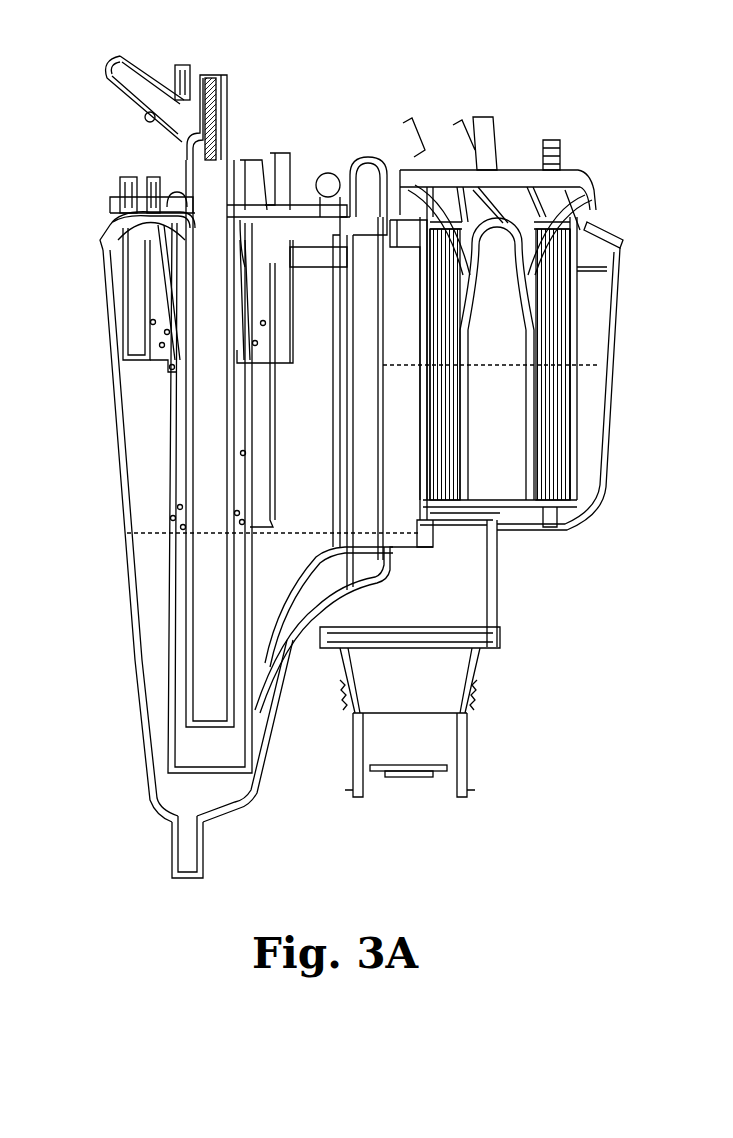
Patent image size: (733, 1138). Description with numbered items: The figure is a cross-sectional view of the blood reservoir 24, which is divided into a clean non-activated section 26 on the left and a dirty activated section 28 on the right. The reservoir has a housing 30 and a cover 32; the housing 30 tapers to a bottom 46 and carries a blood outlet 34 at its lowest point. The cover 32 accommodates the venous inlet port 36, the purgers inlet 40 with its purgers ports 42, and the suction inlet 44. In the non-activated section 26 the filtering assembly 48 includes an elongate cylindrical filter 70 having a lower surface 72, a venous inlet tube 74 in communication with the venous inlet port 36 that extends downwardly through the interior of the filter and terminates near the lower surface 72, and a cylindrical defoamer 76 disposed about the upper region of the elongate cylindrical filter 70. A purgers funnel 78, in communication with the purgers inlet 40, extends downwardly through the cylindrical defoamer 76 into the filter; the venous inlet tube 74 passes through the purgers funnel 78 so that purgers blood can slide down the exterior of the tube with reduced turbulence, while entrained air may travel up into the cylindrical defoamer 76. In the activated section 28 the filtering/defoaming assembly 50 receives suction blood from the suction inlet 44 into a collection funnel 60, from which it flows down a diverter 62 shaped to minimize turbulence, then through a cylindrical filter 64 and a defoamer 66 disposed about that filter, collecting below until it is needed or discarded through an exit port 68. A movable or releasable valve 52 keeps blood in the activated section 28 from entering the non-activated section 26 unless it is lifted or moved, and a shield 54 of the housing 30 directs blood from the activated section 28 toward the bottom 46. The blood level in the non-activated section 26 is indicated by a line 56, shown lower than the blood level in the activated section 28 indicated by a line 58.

The blood reservoir 24 is at (311, 73).
The non-activated section 26 is at (82, 70).
The activated section 28 is at (626, 183).
The housing 30 is at (618, 300).
The cover 32 is at (605, 237).
The blood outlet 34 is at (183, 855).
The venous inlet port 36 is at (148, 75).
The purgers inlet 40 is at (114, 176).
The purgers ports 42 is at (132, 178).
The suction inlet 44 is at (522, 129).
The bottom 46 is at (140, 742).
The filtering assembly 48 is at (137, 410).
The filtering/defoaming assembly 50 is at (590, 349).
The valve 52 is at (367, 505).
The shield 54 is at (283, 635).
The line 56 is at (147, 533).
The line 58 is at (588, 367).
The collection funnel 60 is at (585, 197).
The diverter 62 is at (500, 327).
The cylindrical filter 64 is at (527, 460).
The defoamer 66 is at (557, 428).
The exit port 68 is at (370, 577).
The elongate cylindrical filter 70 is at (163, 628).
The lower surface 72 is at (236, 780).
The venous inlet tube 74 is at (205, 392).
The cylindrical defoamer 76 is at (125, 325).
The purgers funnel 78 is at (118, 215).